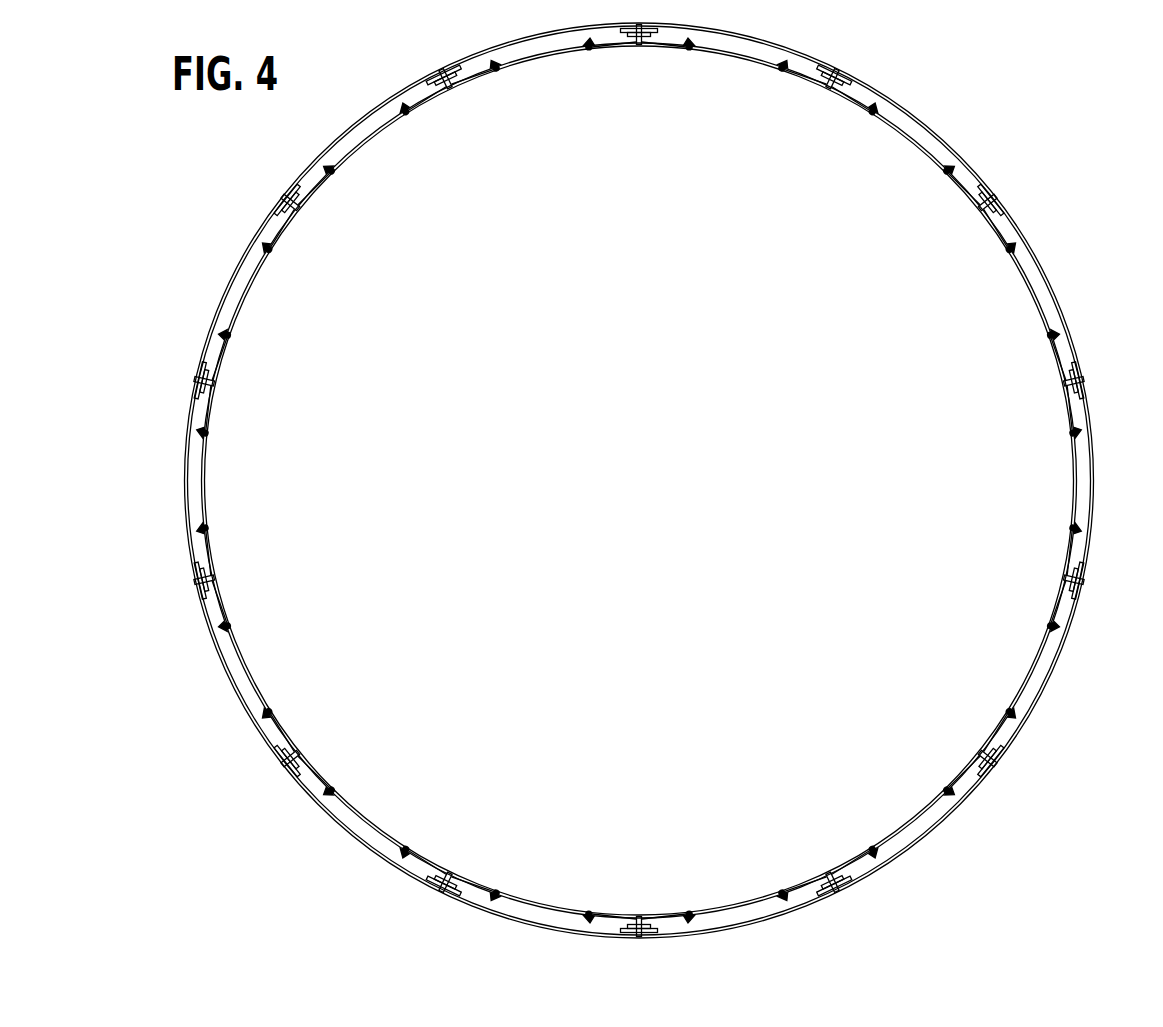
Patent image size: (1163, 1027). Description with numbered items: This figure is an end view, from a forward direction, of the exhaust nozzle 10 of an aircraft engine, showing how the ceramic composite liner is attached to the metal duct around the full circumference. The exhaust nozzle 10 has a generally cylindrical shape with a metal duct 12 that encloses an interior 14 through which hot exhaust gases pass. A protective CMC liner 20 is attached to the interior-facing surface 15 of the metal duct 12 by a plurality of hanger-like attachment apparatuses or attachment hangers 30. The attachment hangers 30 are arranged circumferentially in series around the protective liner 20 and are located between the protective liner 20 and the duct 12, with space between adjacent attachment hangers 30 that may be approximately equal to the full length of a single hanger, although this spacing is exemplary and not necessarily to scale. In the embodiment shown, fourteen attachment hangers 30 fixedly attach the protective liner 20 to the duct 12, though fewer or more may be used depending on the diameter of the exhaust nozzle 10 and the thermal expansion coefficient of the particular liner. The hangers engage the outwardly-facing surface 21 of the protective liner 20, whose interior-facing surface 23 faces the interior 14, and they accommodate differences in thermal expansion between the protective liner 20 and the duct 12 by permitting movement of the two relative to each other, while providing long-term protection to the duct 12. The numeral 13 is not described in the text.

The exhaust nozzle 10 is at (673, 480).
The metal duct 12 is at (659, 480).
The outer ring wall 13 is at (1067, 301).
The interior 14 is at (642, 477).
The interior-facing surface 15 is at (903, 124).
The protective CMC liner 20 is at (683, 480).
The outwardly-facing surface 21 is at (1077, 521).
The interior-facing surface 23 is at (1008, 691).
The attachment hanger 30 is at (1084, 393).